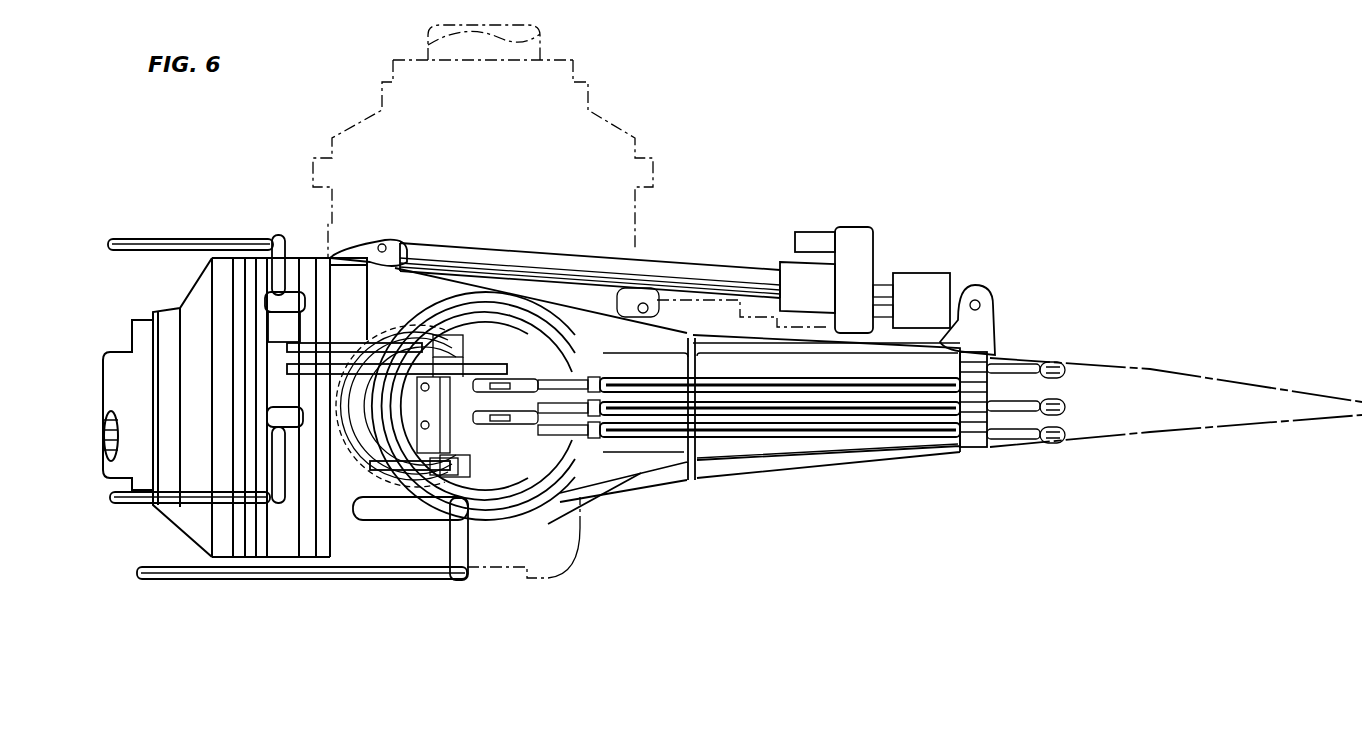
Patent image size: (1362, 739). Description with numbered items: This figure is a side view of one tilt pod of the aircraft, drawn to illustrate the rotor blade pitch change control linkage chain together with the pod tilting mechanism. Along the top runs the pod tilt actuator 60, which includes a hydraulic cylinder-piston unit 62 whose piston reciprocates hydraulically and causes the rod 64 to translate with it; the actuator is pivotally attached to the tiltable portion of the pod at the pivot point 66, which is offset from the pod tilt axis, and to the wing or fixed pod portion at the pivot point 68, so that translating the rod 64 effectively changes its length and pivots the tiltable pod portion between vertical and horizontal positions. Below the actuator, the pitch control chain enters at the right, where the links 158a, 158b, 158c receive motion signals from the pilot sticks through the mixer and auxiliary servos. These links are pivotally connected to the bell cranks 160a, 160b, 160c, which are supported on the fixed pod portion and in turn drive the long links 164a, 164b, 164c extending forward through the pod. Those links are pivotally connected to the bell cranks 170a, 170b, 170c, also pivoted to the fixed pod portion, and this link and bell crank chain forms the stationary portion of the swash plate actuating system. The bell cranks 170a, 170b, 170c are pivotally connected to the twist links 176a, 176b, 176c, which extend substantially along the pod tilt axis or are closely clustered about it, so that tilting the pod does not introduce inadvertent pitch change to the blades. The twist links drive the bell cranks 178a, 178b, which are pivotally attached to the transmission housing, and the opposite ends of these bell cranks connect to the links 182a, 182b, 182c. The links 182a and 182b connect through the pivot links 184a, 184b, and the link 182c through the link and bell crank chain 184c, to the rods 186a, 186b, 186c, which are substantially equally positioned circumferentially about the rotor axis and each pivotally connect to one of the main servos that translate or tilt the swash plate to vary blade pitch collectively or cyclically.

The pod tilt actuator 60 is at (893, 270).
The hydraulic cylinder-piston unit 62 is at (937, 273).
The rod 64 is at (706, 240).
The pivot point 66 is at (385, 240).
The pivot point 68 is at (993, 312).
The link 158a is at (1067, 372).
The link 158b is at (1067, 406).
The link 158c is at (1067, 433).
The bell crank 160a is at (1017, 364).
The bell crank 160b is at (1004, 384).
The bell crank 160c is at (1010, 435).
The link 164a is at (762, 364).
The link 164b is at (840, 377).
The link 164c is at (767, 437).
The bell crank 170a is at (560, 377).
The bell crank 170b is at (684, 384).
The bell crank 170c is at (562, 434).
The twist link 176a is at (478, 379).
The twist link 176b is at (490, 425).
The twist link 176c is at (568, 480).
The bell crank 178a is at (440, 383).
The bell crank 178b is at (460, 448).
The link 182a is at (344, 343).
The link 182b is at (527, 362).
The link 182c is at (540, 392).
The pivot link 184a is at (310, 222).
The pivot link 184b is at (282, 492).
The link and bell crank chain 184c is at (468, 545).
The rod 186a is at (197, 222).
The rod 186b is at (121, 503).
The rod 186c is at (161, 579).